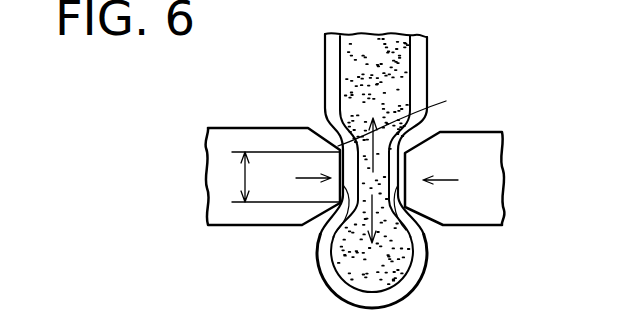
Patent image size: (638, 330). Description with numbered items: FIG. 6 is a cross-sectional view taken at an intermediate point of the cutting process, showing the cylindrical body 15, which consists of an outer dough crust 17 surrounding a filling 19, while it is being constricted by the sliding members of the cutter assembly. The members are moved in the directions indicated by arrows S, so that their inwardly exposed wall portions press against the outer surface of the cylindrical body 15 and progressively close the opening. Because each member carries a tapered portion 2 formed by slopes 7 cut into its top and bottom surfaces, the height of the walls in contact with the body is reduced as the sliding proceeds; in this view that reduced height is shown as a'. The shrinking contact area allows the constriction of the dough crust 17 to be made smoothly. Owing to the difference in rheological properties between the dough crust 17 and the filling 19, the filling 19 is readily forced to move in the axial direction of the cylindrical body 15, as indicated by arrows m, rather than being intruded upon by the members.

The cylindrical body 15 is at (414, 31).
The dough crust 17 is at (425, 71).
The filling 19 is at (373, 48).
The arrows indicating axial movement of filling m is at (445, 261).
The tapered portion 2 is at (405, 180).
The arrows indicating sliding direction S is at (383, 168).
The height of walls a' is at (235, 177).
The slope 7 is at (434, 226).